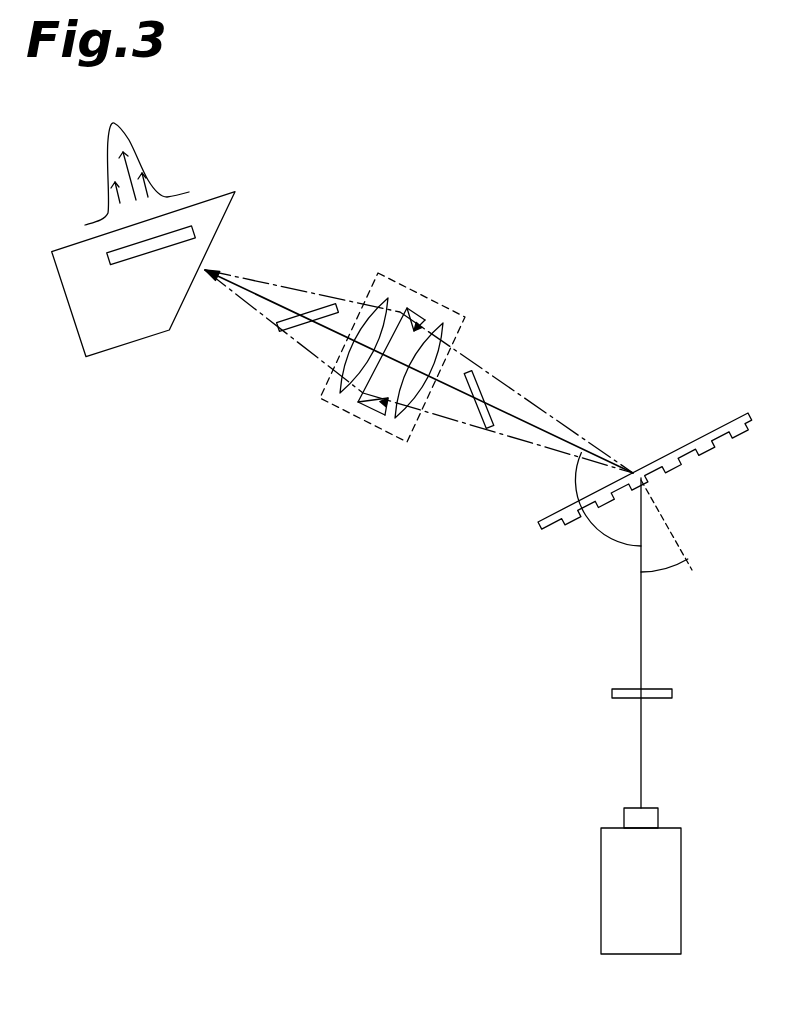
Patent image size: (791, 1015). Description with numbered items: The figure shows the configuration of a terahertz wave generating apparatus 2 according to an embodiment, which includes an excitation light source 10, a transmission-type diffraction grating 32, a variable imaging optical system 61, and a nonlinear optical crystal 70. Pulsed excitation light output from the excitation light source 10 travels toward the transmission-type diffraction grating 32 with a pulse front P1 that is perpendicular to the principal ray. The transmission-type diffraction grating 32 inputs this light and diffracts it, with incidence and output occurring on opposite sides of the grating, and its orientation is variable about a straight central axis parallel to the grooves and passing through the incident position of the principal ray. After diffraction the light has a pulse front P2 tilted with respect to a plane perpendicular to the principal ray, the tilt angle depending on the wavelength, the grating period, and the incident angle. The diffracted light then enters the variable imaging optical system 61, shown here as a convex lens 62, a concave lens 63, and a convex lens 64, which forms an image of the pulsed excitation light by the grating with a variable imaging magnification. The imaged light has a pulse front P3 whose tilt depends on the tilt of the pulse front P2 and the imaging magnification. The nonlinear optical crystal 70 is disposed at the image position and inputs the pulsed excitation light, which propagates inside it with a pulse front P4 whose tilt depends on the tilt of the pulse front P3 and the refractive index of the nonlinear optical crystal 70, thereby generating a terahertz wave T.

The terahertz wave generating apparatus 2 is at (630, 233).
The excitation light source 10 is at (682, 887).
The pulse front P1 is at (673, 692).
The transmission-type diffraction grating 32 is at (697, 433).
The pulse front P2 is at (483, 388).
The variable imaging optical system 61 is at (357, 417).
The convex lens 62 is at (447, 333).
The concave lens 63 is at (423, 308).
The convex lens 64 is at (375, 300).
The pulse front P3 is at (312, 310).
The nonlinear optical crystal 70 is at (127, 347).
The pulse front P4 is at (196, 233).
The terahertz wave T is at (137, 148).